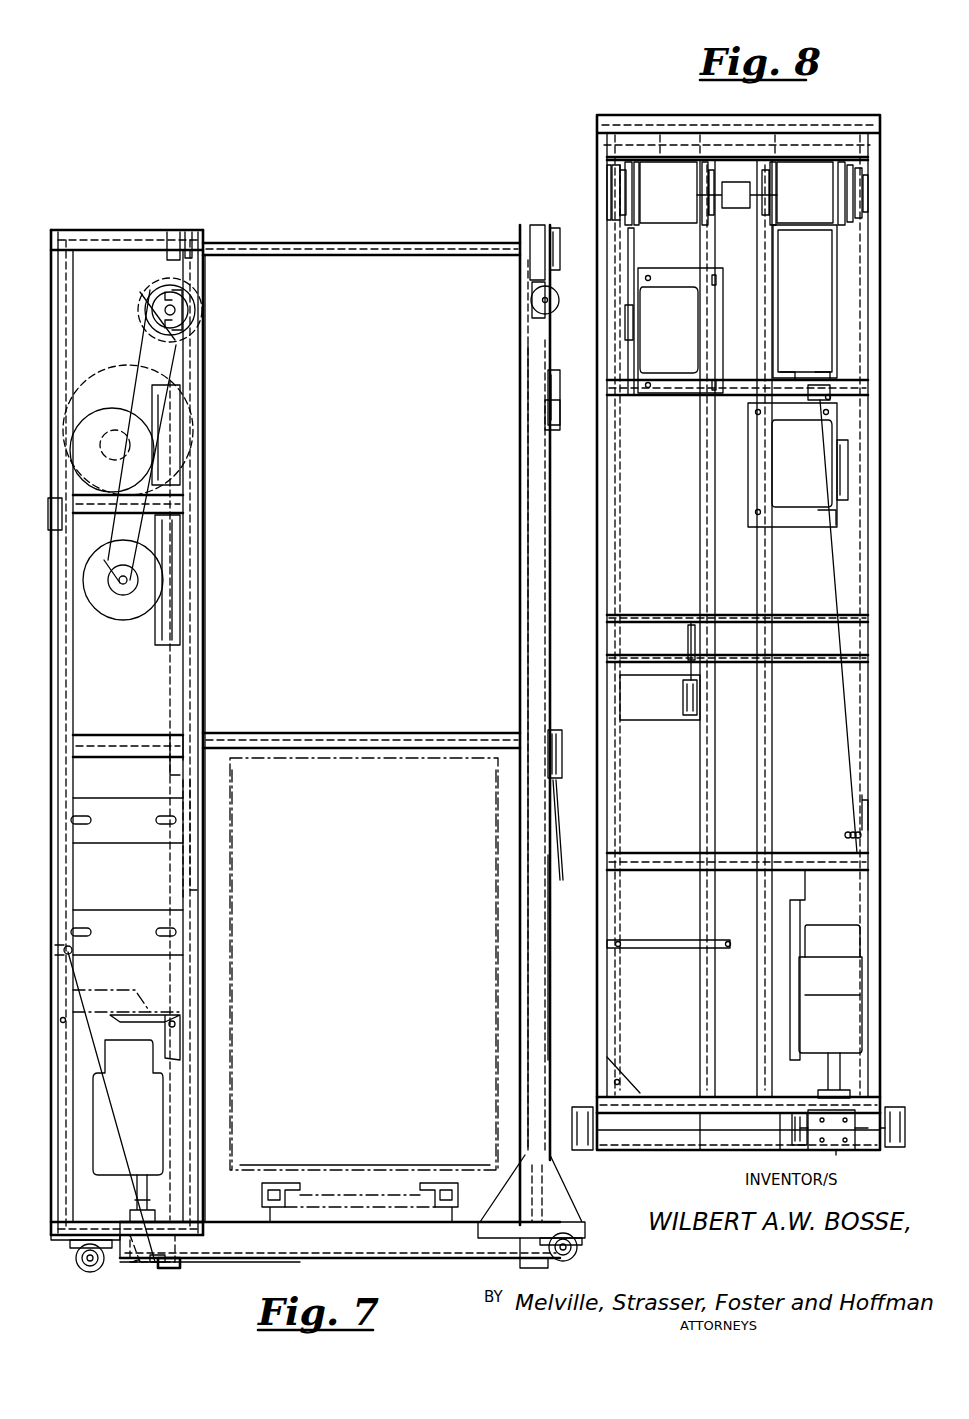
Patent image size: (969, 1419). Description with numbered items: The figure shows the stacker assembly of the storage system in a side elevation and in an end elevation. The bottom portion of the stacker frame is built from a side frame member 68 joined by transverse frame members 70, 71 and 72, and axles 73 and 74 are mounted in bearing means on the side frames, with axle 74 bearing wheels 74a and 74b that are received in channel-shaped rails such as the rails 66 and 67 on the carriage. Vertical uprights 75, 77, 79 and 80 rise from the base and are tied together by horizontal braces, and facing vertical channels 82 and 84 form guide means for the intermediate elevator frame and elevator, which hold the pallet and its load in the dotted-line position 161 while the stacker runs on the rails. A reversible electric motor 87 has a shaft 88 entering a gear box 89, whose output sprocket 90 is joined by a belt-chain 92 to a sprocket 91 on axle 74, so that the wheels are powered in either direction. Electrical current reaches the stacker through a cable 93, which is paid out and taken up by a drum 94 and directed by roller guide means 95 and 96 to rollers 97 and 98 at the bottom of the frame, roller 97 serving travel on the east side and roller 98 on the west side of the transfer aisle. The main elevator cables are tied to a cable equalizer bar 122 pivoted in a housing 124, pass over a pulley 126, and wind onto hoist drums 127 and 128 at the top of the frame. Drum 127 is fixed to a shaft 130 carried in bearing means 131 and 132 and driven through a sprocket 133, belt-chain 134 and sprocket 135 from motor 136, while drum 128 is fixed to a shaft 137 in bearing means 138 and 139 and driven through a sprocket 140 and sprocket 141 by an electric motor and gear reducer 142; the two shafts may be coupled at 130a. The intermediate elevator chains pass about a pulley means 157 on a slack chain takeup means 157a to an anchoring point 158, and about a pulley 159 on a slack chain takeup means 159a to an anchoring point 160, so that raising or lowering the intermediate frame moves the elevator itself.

In FIG. 7, the rail 66 is at (580, 1105).
In FIG. 8, the rail 67 is at (898, 1107).
In FIG. 7, the side frame member 68 is at (440, 1240).
In FIG. 7, the transverse frame member 70 is at (548, 1180).
In FIG. 7, the transverse frame member 71 is at (178, 1270).
In FIG. 8, the transverse frame member 71 is at (672, 1150).
In FIG. 7, the transverse frame member 72 is at (73, 1231).
In FIG. 7, the axle 73 is at (578, 1248).
In FIG. 7, the axle 74 is at (72, 1248).
In FIG. 8, the axle 74 is at (648, 1130).
In FIG. 8, the wheel 74a is at (895, 1150).
In FIG. 8, the wheel 74b is at (640, 1120).
In FIG. 7, the upright 75 is at (550, 555).
In FIG. 7, the upright 77 is at (183, 870).
In FIG. 7, the upright 79 is at (73, 702).
In FIG. 8, the upright 79 is at (880, 300).
In FIG. 7, the upright 80 is at (361, 249).
In FIG. 8, the upright 80 is at (607, 210).
In FIG. 7, the vertical channel 82 is at (520, 435).
In FIG. 7, the vertical channel 84 is at (205, 470).
In FIG. 7, the electric motor 87 is at (138, 1084).
In FIG. 8, the electric motor 87 is at (840, 965).
In FIG. 7, the shaft 88 is at (158, 1190).
In FIG. 8, the shaft 88 is at (826, 1075).
In FIG. 8, the gear box 89 is at (840, 1150).
In FIG. 7, the sprocket 90 is at (152, 1265).
In FIG. 7, the sprocket 91 is at (78, 1266).
In FIG. 8, the sprocket 91 is at (790, 1140).
In FIG. 7, the belt-chain 92 is at (96, 1270).
In FIG. 8, the belt-chain 92 is at (805, 1150).
In FIG. 7, the stacker cable 93 is at (110, 1117).
In FIG. 8, the stacker cable 93 is at (840, 747).
In FIG. 7, the drum 94 is at (96, 372).
In FIG. 8, the drum 94 is at (808, 325).
In FIG. 7, the roller guide means 95 is at (50, 532).
In FIG. 8, the roller guide means 95 is at (830, 392).
In FIG. 7, the roller guide means 96 is at (72, 948).
In FIG. 8, the roller guide means 96 is at (858, 830).
In FIG. 7, the roller 97 is at (176, 1242).
In FIG. 7, the roller 98 is at (132, 1262).
In FIG. 7, the cable equalizer bar 122 is at (560, 420).
In FIG. 7, the housing 124 is at (560, 385).
In FIG. 7, the pulley 126 is at (530, 305).
In FIG. 8, the hoist drum 127 is at (668, 185).
In FIG. 8, the hoist drum 128 is at (808, 190).
In FIG. 8, the shaft 130 is at (620, 190).
In FIG. 8, the coupling 130a is at (735, 200).
In FIG. 8, the bearing means 131 is at (612, 175).
In FIG. 8, the bearing means 132 is at (708, 180).
In FIG. 8, the sprocket 133 is at (628, 180).
In FIG. 8, the belt-chain 134 is at (634, 250).
In FIG. 8, the sprocket 135 is at (625, 322).
In FIG. 8, the motor 136 is at (683, 331).
In FIG. 7, the shaft 137 is at (178, 308).
In FIG. 8, the shaft 137 is at (862, 190).
In FIG. 7, the bearing means 138 is at (190, 325).
In FIG. 8, the bearing means 138 is at (868, 225).
In FIG. 8, the bearing means 139 is at (768, 185).
In FIG. 7, the sprocket 140 is at (195, 282).
In FIG. 8, the sprocket 140 is at (845, 185).
In FIG. 7, the sprocket 141 is at (140, 605).
In FIG. 8, the sprocket 141 is at (848, 470).
In FIG. 7, the electric motor and gear reducer 142 is at (100, 613).
In FIG. 8, the electric motor and gear reducer 142 is at (812, 473).
In FIG. 7, the pulley means 157 is at (568, 828).
In FIG. 7, the slack chain takeup means 157a is at (556, 855).
In FIG. 7, the anchoring point 158 is at (558, 732).
In FIG. 8, the pulley 159 is at (683, 695).
In FIG. 8, the slack chain takeup means 159a is at (652, 720).
In FIG. 8, the anchoring point 160 is at (688, 640).
In FIG. 7, the pallet position 161 is at (330, 760).